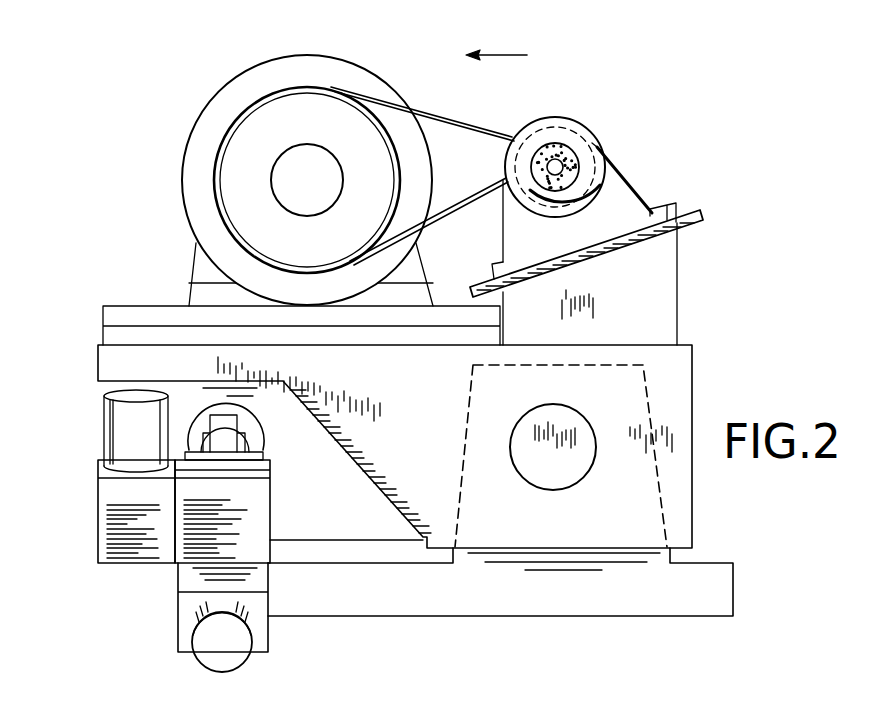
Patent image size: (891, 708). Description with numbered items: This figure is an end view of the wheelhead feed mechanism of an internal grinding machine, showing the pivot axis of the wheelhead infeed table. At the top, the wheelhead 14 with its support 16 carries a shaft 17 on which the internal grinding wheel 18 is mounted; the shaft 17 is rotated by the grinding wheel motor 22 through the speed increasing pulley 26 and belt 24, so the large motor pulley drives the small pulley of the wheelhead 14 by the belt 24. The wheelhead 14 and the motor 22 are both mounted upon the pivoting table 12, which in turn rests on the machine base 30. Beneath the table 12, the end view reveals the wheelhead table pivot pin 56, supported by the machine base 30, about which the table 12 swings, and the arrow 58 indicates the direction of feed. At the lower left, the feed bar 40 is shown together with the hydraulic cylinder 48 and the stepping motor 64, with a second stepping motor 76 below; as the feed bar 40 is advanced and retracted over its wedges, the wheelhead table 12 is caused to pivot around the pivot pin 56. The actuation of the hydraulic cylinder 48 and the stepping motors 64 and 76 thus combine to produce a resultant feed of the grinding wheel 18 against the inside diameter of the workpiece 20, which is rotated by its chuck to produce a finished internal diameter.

The pivoting table 12 is at (136, 306).
The wheelhead 14 is at (557, 117).
The wheelhead support 16 is at (679, 270).
The shaft 17 is at (547, 165).
The internal grinding wheel 18 is at (547, 186).
The workpiece 20 is at (603, 146).
The grinding wheel motor 22 is at (351, 50).
The belt 24 is at (475, 127).
The speed increasing pulley 26 is at (224, 136).
The machine base 30 is at (520, 614).
The feed bar 40 is at (262, 449).
The hydraulic cylinder 48 is at (191, 425).
The wheelhead table pivot pin 56 is at (571, 487).
The arrow 58 is at (506, 56).
The stepping motor 64 is at (103, 431).
The stepping motor 76 is at (228, 654).